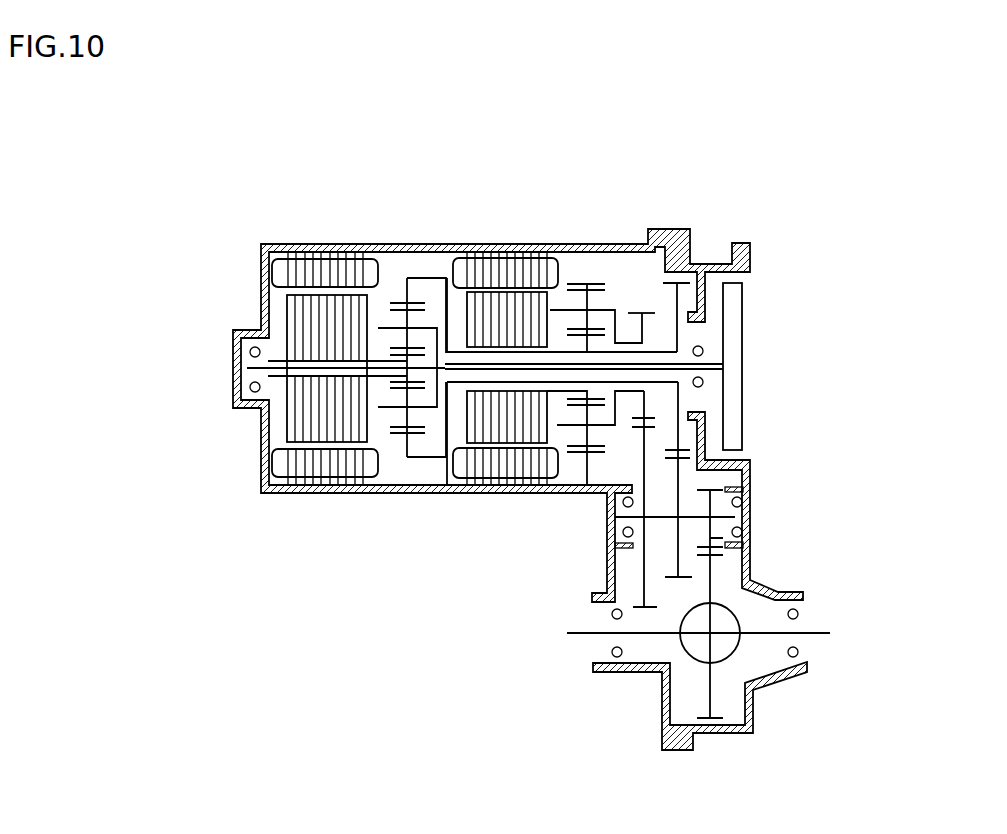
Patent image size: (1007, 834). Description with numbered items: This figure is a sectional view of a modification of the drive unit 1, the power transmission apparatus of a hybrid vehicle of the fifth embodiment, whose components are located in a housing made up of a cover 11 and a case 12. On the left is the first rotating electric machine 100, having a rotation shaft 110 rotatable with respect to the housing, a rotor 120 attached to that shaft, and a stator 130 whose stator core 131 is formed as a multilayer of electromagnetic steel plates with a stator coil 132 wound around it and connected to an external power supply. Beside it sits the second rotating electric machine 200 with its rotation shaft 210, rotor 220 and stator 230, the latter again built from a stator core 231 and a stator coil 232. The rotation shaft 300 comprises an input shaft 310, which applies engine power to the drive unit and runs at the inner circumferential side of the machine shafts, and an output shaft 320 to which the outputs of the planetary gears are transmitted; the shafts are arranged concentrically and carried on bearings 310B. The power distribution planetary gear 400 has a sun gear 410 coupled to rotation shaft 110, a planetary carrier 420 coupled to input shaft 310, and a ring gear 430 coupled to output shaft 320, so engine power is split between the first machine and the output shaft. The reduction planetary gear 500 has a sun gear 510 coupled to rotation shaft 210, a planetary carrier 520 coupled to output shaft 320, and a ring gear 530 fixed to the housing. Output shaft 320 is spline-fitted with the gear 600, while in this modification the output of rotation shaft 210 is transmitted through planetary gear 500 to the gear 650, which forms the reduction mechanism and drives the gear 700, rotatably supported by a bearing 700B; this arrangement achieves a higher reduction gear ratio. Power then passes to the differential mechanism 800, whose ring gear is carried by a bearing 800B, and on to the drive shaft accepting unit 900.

The drive unit 1 is at (181, 119).
The cover 11 is at (745, 475).
The case 12 is at (262, 446).
The rotating electric machine 100 is at (360, 153).
The rotation shaft 110 is at (282, 355).
The rotor 120 is at (295, 315).
The stator 130 is at (385, 185).
The stator core 131 is at (327, 268).
The stator coil 132 is at (373, 272).
The rotating electric machine 200 is at (513, 121).
The rotation shaft 210 is at (565, 385).
The rotor 220 is at (480, 292).
The stator 230 is at (537, 153).
The stator core 231 is at (493, 270).
The stator coil 232 is at (550, 270).
The rotation shaft 300 is at (818, 340).
The input shaft 310 is at (708, 365).
The bearing 310B is at (703, 349).
The output shaft 320 is at (648, 372).
The planetary gear 400 is at (477, 539).
The sun gear 410 is at (402, 386).
The planetary carrier 420 is at (430, 410).
The ring gear 430 is at (417, 437).
The planetary gear 500 is at (672, 183).
The sun gear 510 is at (610, 309).
The planetary carrier 520 is at (638, 312).
The ring gear 530 is at (578, 284).
The gear 600 is at (680, 302).
The gear 650 is at (648, 413).
The gear 700 is at (745, 539).
The bearing 700B is at (743, 502).
The differential mechanism 800 is at (727, 662).
The bearing 800B is at (612, 615).
The drive shaft accepting unit 900 is at (605, 636).